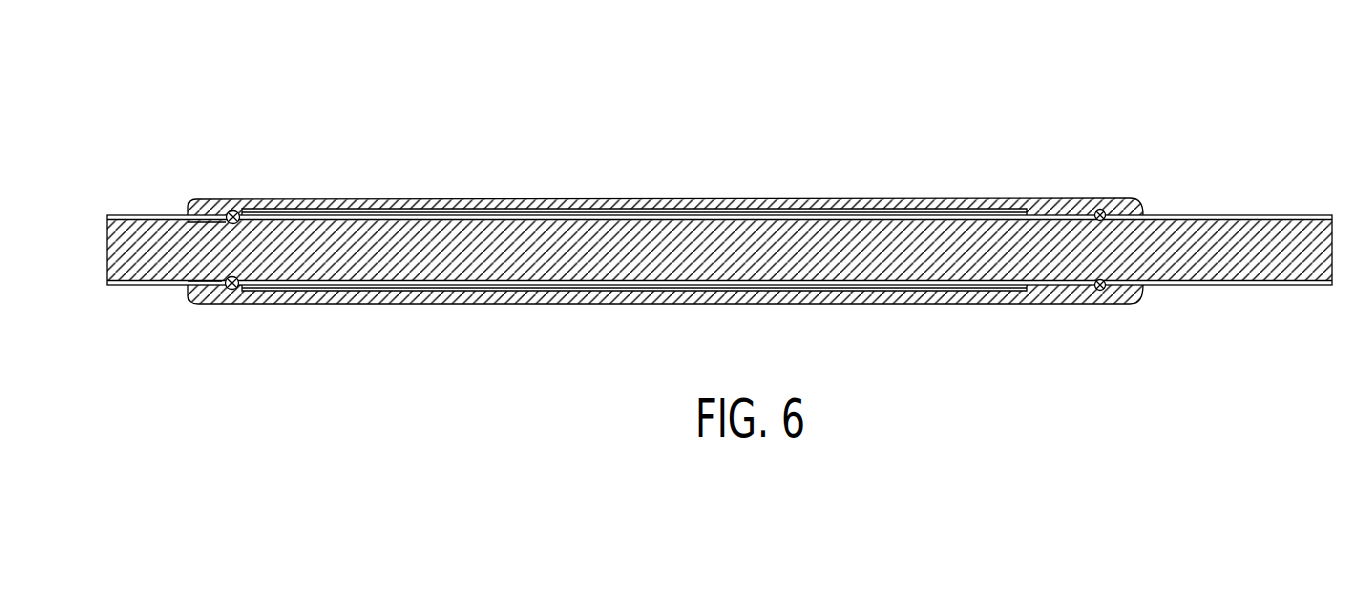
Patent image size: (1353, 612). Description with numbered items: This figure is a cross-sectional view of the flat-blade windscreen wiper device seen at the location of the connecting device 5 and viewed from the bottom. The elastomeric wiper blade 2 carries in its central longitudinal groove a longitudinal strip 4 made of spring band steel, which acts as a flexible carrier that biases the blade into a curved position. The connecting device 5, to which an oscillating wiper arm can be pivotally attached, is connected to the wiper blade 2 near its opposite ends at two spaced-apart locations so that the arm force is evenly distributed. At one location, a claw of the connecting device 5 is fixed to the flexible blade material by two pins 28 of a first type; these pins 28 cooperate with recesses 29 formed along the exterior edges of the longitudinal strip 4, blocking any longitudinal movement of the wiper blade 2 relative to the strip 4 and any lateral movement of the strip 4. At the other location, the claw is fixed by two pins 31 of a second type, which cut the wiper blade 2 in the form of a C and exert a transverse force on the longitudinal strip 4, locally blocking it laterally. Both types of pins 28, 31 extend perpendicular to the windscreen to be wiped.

The wiper blade 2 is at (715, 216).
The longitudinal strip 4 is at (1240, 244).
The connecting device 5 is at (861, 205).
The pins of a first type 28 is at (234, 276).
The recesses 29 is at (227, 220).
The pins of a second type 31 is at (1100, 210).